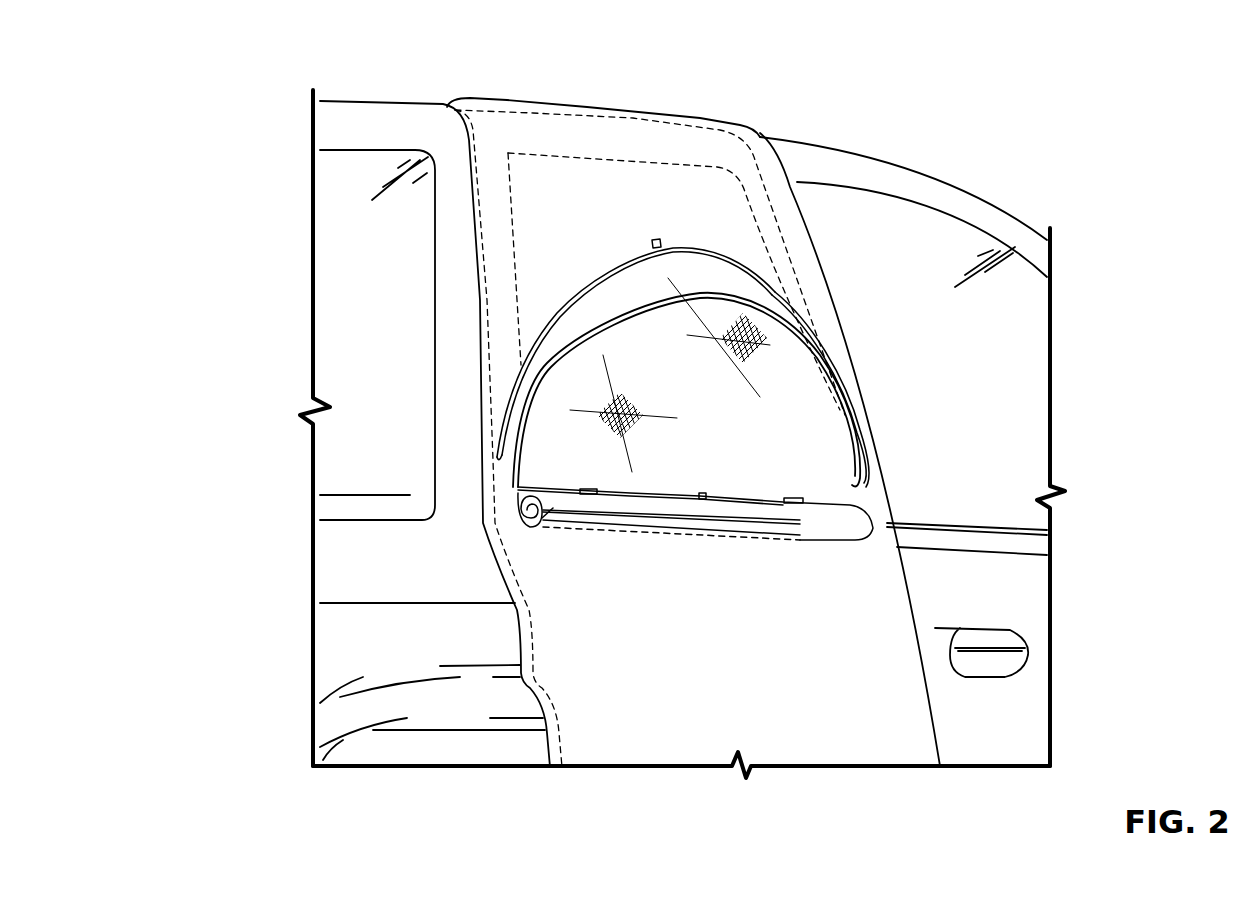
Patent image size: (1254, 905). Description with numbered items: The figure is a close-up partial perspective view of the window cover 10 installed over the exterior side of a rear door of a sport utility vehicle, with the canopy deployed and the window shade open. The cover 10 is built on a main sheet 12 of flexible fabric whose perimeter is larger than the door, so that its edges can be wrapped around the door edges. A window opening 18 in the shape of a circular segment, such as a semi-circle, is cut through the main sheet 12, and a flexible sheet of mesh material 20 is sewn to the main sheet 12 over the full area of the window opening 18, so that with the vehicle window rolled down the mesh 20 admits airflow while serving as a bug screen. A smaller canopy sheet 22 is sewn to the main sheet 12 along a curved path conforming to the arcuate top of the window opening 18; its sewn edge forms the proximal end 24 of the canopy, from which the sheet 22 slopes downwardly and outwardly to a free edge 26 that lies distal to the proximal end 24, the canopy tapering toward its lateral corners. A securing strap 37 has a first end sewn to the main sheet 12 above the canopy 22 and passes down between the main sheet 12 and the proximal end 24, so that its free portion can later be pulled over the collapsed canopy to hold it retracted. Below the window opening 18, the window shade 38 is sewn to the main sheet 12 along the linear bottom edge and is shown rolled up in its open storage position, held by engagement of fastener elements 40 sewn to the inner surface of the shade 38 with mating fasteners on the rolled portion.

The window cover 10 is at (426, 137).
The main sheet 12 is at (540, 137).
The window opening 18 is at (820, 492).
The mesh material 20 is at (807, 450).
The canopy sheet 22 is at (735, 285).
The proximal end 24 is at (633, 246).
The free edge 26 is at (840, 340).
The securing strap 37 is at (660, 241).
The window shade 38 is at (540, 522).
The fastener elements 40 is at (588, 494).